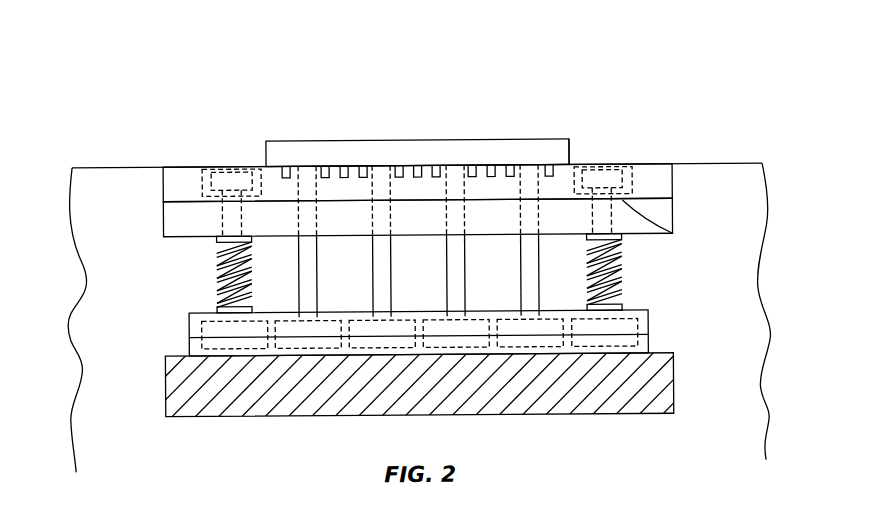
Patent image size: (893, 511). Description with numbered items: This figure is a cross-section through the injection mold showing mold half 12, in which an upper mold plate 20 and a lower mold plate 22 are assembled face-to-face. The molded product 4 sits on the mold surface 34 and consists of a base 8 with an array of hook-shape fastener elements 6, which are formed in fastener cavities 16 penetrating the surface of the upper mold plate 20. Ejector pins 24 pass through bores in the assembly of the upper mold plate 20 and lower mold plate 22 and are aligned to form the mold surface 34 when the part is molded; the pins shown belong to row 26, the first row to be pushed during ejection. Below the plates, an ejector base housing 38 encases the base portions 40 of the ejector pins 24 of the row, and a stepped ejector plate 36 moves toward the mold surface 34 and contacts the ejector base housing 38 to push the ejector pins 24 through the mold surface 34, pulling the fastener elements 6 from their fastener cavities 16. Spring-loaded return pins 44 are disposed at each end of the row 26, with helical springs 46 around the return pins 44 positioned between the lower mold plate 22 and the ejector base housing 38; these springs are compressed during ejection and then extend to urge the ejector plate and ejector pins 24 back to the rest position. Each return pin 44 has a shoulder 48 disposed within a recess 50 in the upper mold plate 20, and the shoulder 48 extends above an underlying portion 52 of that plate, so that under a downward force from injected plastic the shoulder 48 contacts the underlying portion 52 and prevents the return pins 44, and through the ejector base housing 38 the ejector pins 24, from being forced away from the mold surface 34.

The molded product 4 is at (552, 140).
The fastener elements 6 is at (224, 141).
The fastener cavities 16 is at (282, 172).
The base 8 is at (572, 151).
The mold half 12 is at (752, 250).
The upper mold plate 20 is at (673, 192).
The lower mold plate 22 is at (673, 220).
The ejector pins 24 is at (522, 264).
The row 26 is at (325, 274).
The mold surface 34 is at (745, 166).
The stepped ejector plate 36 is at (675, 374).
The ejector base housing 38 is at (648, 318).
The base portions 40 is at (202, 326).
The return pins 44 is at (218, 284).
The helical springs 46 is at (622, 276).
The shoulder 48 is at (613, 176).
The recess 50 is at (203, 166).
The underlying portion 52 is at (673, 235).